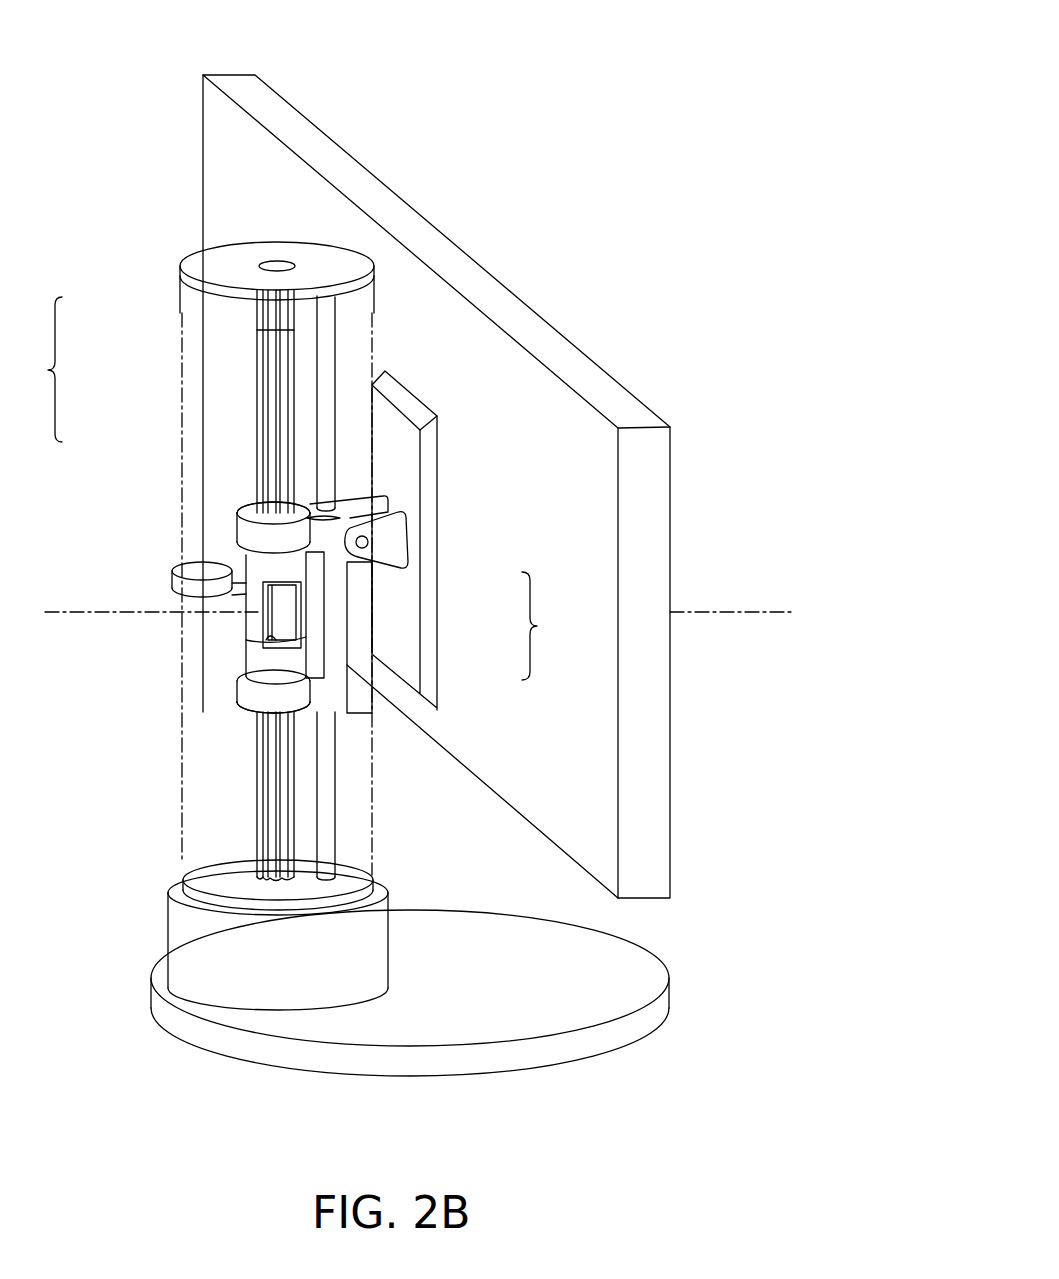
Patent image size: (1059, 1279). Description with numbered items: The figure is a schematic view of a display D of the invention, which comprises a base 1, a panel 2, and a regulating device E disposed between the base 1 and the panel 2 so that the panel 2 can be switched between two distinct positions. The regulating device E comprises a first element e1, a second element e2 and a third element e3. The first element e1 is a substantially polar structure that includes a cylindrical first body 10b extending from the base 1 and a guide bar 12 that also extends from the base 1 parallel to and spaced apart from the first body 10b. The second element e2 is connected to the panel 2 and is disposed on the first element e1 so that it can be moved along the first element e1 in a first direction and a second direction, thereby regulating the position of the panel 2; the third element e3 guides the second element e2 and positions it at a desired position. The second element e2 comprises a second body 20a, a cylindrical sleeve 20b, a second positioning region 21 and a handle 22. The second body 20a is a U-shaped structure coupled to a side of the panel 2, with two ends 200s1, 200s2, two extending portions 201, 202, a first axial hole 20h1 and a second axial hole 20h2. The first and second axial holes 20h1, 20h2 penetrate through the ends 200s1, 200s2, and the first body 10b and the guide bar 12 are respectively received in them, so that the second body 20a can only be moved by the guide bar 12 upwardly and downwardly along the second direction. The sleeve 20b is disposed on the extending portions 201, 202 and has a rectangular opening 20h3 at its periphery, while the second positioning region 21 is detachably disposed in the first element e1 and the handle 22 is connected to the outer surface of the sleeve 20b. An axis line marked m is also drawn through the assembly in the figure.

The base 1 is at (640, 1048).
The panel 2 is at (640, 392).
The first body 10b is at (292, 327).
The guide bar 12 is at (327, 352).
The end 200s1 is at (305, 500).
The end 200s2 is at (290, 713).
The extending portion 201 is at (278, 537).
The extending portion 202 is at (273, 703).
The second body 20a is at (334, 625).
The cylindrical sleeve 20b is at (290, 663).
The first axial hole 20h1 is at (352, 520).
The second axial hole 20h2 is at (308, 520).
The rectangular opening 20h3 is at (273, 633).
The second positioning region 21 is at (284, 598).
The handle 22 is at (193, 567).
The regulating device E is at (48, 389).
The first element e1 is at (250, 343).
The second element e2 is at (240, 557).
The third element e3 is at (180, 372).
The axis m is at (57, 612).
The display D is at (706, 33).